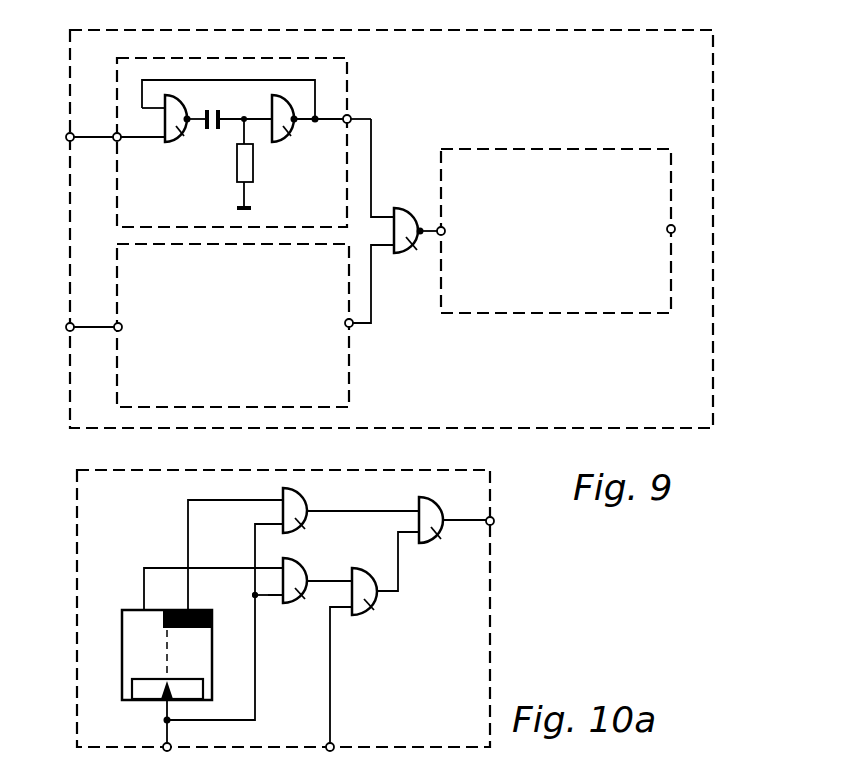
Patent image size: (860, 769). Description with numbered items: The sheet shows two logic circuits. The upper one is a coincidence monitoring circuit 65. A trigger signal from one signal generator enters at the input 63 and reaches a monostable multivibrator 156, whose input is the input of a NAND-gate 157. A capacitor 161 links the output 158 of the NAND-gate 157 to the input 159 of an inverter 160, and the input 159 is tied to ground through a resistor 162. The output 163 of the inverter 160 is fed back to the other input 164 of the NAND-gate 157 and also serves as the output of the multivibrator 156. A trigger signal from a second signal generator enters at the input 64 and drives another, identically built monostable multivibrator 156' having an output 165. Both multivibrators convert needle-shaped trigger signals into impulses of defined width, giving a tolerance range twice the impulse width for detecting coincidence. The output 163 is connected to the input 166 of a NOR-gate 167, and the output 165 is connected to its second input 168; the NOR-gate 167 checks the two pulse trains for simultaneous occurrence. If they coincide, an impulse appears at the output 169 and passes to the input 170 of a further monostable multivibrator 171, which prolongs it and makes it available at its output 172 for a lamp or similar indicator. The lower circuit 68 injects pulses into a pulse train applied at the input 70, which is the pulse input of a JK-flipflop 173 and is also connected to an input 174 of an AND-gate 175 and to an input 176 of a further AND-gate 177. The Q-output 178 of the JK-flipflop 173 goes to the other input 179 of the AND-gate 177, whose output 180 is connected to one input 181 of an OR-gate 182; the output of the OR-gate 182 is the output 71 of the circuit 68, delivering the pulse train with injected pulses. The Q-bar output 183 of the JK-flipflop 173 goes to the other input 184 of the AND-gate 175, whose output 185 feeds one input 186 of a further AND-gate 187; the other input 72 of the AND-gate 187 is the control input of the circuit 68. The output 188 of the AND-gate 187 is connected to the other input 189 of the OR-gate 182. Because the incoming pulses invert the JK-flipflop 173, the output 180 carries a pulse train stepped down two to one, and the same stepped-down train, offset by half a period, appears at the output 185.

In FIG. 9, the input 63 is at (70, 133).
In FIG. 9, the input 64 is at (68, 332).
In FIG. 9, the coincidence monitoring circuit 65 is at (90, 398).
In FIG. 9, the monostable multivibrator 156 is at (265, 142).
In FIG. 9, the monostable multivibrator 156' is at (266, 325).
In FIG. 9, the NAND-gate 157 is at (165, 141).
In FIG. 9, the output 158 is at (187, 135).
In FIG. 9, the input 159 is at (268, 116).
In FIG. 9, the inverter 160 is at (285, 137).
In FIG. 9, the capacitor 161 is at (213, 133).
In FIG. 9, the resistor 162 is at (240, 166).
In FIG. 9, the output 163 is at (352, 116).
In FIG. 9, the input 164 is at (160, 108).
In FIG. 9, the output 165 is at (352, 328).
In FIG. 9, the input 166 is at (392, 208).
In FIG. 9, the NOR-gate 167 is at (408, 240).
In FIG. 9, the input line 168 is at (392, 255).
In FIG. 9, the output 169 is at (421, 228).
In FIG. 9, the input 170 is at (445, 231).
In FIG. 9, the monostable multivibrator 171 is at (507, 300).
In FIG. 9, the output 172 is at (674, 233).
In FIG. 10A, the circuit for injecting pulses 68 is at (470, 672).
In FIG. 10A, the input 70 is at (163, 745).
In FIG. 10A, the output 71 is at (495, 527).
In FIG. 10A, the input 72 is at (333, 745).
In FIG. 10A, the JK-flipflop 173 is at (205, 668).
In FIG. 10A, the input 174 is at (258, 600).
In FIG. 10A, the AND-gate 175 is at (278, 606).
In FIG. 10A, the input 176 is at (283, 522).
In FIG. 10A, the AND-gate 177 is at (300, 524).
In FIG. 10A, the Q-output 178 is at (190, 608).
In FIG. 10A, the input 179 is at (283, 497).
In FIG. 10A, the output 180 is at (322, 511).
In FIG. 10A, the input 181 is at (419, 502).
In FIG. 10A, the OR-gate 182 is at (446, 517).
In FIG. 10A, the Q-bar output 183 is at (143, 608).
In FIG. 10A, the input 184 is at (283, 566).
In FIG. 10A, the output 185 is at (294, 600).
In FIG. 10A, the input 186 is at (348, 580).
In FIG. 10A, the AND-gate 187 is at (358, 612).
In FIG. 10A, the output 188 is at (400, 598).
In FIG. 10A, the input 189 is at (421, 536).